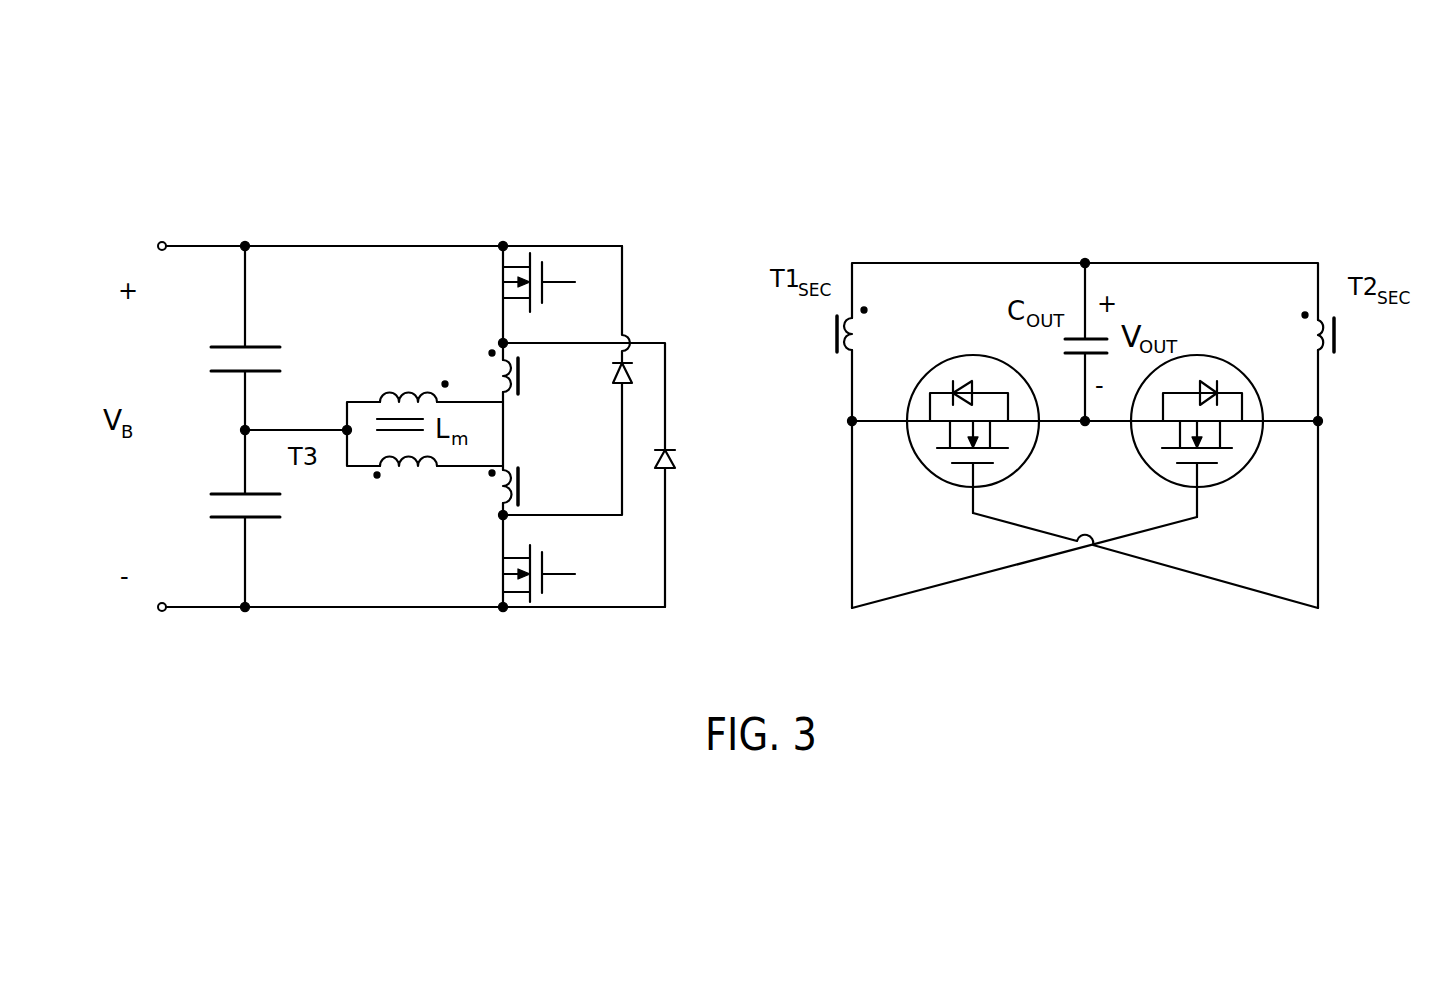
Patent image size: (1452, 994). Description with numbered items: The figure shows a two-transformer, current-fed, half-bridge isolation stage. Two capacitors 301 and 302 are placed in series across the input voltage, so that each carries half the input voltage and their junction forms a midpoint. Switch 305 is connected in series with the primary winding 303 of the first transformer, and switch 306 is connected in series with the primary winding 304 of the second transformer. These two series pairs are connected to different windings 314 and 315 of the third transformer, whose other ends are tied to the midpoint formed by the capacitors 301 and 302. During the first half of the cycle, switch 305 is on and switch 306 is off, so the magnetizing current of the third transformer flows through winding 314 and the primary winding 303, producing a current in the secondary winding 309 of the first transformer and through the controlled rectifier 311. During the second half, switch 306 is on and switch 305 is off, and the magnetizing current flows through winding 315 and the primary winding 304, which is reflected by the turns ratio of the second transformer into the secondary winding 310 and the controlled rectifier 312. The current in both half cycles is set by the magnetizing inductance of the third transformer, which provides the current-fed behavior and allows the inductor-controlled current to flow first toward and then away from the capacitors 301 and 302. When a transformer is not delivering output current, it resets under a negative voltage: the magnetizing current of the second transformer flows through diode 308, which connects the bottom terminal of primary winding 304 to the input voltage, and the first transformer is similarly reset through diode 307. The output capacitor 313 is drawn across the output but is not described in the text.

The capacitor 301 is at (230, 346).
The capacitor 302 is at (230, 518).
The primary winding of transformer T1 303 is at (506, 374).
The primary winding of transformer T2 304 is at (504, 490).
The switch 305 is at (545, 293).
The switch 306 is at (544, 567).
The diode 307 is at (668, 463).
The diode 308 is at (612, 380).
The secondary winding of transformer T1 309 is at (851, 338).
The secondary winding of transformer T2 310 is at (1318, 338).
The controlled rectifier 311 is at (937, 482).
The controlled rectifier 312 is at (1226, 485).
The output capacitor COUT 313 is at (1081, 356).
The winding of transformer T3 314 is at (383, 397).
The winding of transformer T3 315 is at (419, 462).